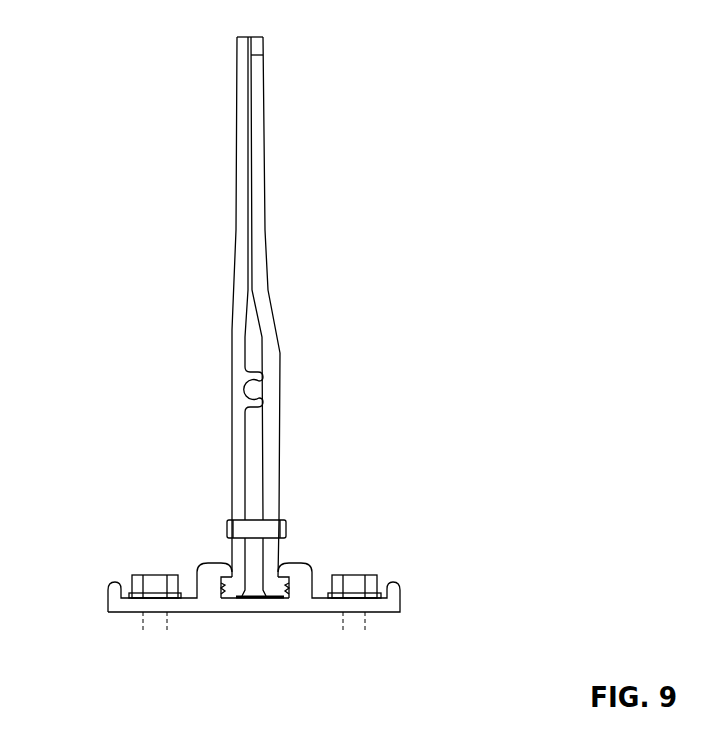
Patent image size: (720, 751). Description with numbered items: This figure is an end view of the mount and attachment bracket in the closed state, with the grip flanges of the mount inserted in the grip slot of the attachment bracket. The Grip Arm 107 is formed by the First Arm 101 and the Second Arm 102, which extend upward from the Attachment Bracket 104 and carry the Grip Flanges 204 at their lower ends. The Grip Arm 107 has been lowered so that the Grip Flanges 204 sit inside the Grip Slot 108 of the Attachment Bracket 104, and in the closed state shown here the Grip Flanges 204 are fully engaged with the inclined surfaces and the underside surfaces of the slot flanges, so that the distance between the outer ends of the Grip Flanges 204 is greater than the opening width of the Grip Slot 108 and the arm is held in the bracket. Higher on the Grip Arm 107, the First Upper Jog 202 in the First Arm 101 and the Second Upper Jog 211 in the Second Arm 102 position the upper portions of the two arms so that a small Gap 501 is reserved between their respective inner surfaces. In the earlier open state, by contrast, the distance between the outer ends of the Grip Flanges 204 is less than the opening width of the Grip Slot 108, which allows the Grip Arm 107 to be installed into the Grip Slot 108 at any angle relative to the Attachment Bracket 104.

The First Arm 101 is at (229, 375).
The Second Arm 102 is at (212, 390).
The Attachment Bracket 104 is at (210, 614).
The Grip Arm 107 is at (264, 316).
The Grip Slot 108 is at (255, 608).
The First Upper Jog 202 is at (292, 308).
The Grip Flanges 204 is at (232, 599).
The Second Upper Jog 211 is at (217, 308).
The Gap 501 is at (257, 278).